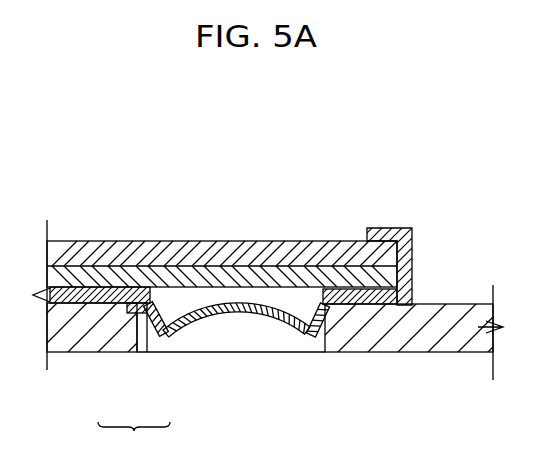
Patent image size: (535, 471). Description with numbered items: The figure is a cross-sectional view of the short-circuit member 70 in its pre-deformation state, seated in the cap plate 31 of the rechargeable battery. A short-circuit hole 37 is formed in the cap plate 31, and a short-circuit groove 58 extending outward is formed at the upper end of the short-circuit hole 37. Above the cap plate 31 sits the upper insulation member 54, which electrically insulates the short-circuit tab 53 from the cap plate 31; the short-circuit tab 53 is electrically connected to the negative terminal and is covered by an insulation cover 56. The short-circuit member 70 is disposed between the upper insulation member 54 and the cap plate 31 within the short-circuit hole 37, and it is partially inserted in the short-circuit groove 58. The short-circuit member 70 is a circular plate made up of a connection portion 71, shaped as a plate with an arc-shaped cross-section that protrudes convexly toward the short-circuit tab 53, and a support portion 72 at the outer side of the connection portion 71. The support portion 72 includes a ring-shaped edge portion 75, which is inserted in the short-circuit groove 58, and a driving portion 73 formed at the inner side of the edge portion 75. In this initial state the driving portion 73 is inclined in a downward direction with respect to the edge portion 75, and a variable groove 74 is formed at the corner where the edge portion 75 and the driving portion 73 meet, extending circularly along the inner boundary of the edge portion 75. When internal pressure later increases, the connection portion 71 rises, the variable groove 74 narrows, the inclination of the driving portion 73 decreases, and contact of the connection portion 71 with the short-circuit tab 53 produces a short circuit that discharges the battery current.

The cap plate 31 is at (449, 340).
The short-circuit hole 37 is at (311, 342).
The short-circuit tab 53 is at (78, 267).
The upper insulation member 54 is at (405, 250).
The insulation cover 56 is at (232, 255).
The short-circuit groove 58 is at (352, 310).
The short-circuit member 70 is at (221, 333).
The connection portion 71 is at (268, 319).
The support portion 72 is at (134, 440).
The driving portion 73 is at (146, 315).
The variable groove 74 is at (153, 312).
The edge portion 75 is at (132, 314).